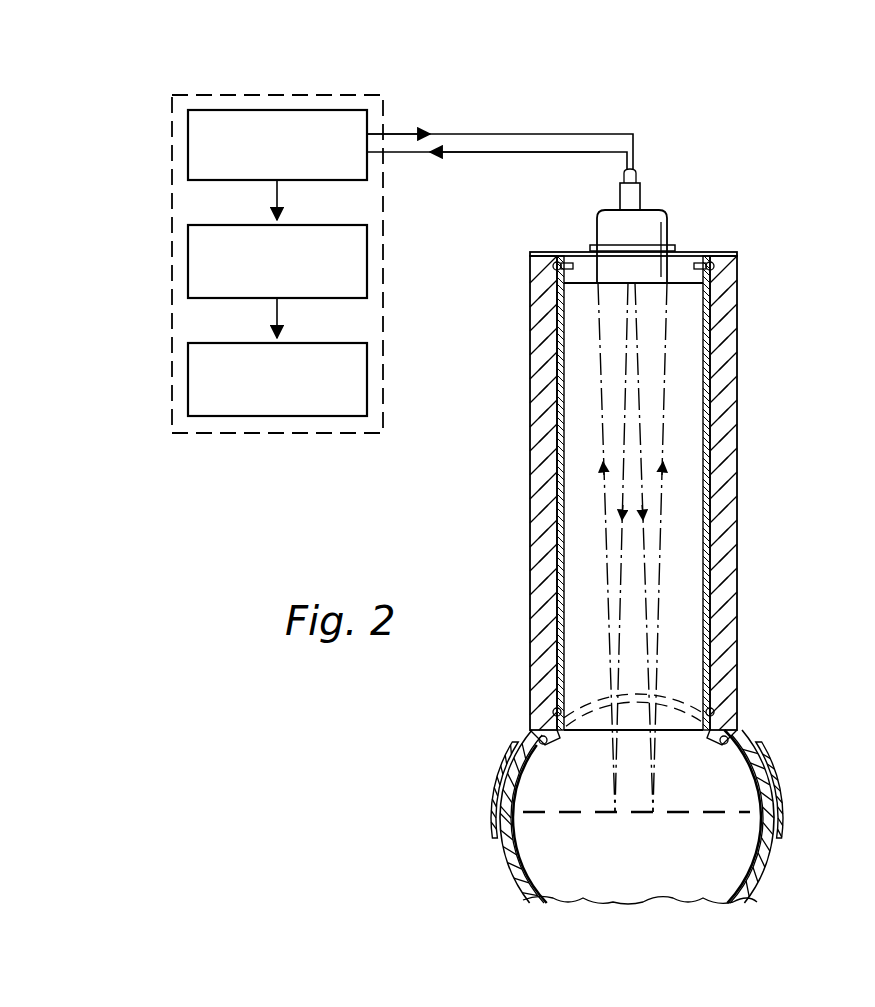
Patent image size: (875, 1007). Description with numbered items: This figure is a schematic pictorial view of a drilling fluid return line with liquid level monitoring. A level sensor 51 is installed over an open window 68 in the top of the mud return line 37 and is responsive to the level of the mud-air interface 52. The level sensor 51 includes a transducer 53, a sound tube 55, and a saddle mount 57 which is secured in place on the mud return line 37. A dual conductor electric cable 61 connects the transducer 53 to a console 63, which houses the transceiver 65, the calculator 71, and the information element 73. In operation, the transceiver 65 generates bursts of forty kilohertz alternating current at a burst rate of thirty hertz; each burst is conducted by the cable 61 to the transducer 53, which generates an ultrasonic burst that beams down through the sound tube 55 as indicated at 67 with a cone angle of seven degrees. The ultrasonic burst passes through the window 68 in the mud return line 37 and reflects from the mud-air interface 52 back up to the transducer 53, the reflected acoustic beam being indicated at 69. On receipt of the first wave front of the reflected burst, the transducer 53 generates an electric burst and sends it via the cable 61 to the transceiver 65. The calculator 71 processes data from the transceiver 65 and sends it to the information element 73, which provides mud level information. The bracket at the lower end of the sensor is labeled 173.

The console 63 is at (288, 95).
The transceiver 65 is at (367, 121).
The calculator 71 is at (367, 236).
The information element 73 is at (367, 359).
The dual conductor electric cable 61 is at (640, 176).
The transducer 53 is at (670, 227).
The level sensor 51 is at (745, 377).
The sound tube 55 is at (710, 520).
The reflected acoustic beam 69 is at (665, 477).
The ultrasonic burst beam 67 is at (643, 504).
The window 68 is at (560, 742).
The mud-air interface 52 is at (672, 812).
The mud return line 37 is at (502, 868).
The saddle mount 57 is at (768, 793).
The mounting bracket 173 is at (726, 736).